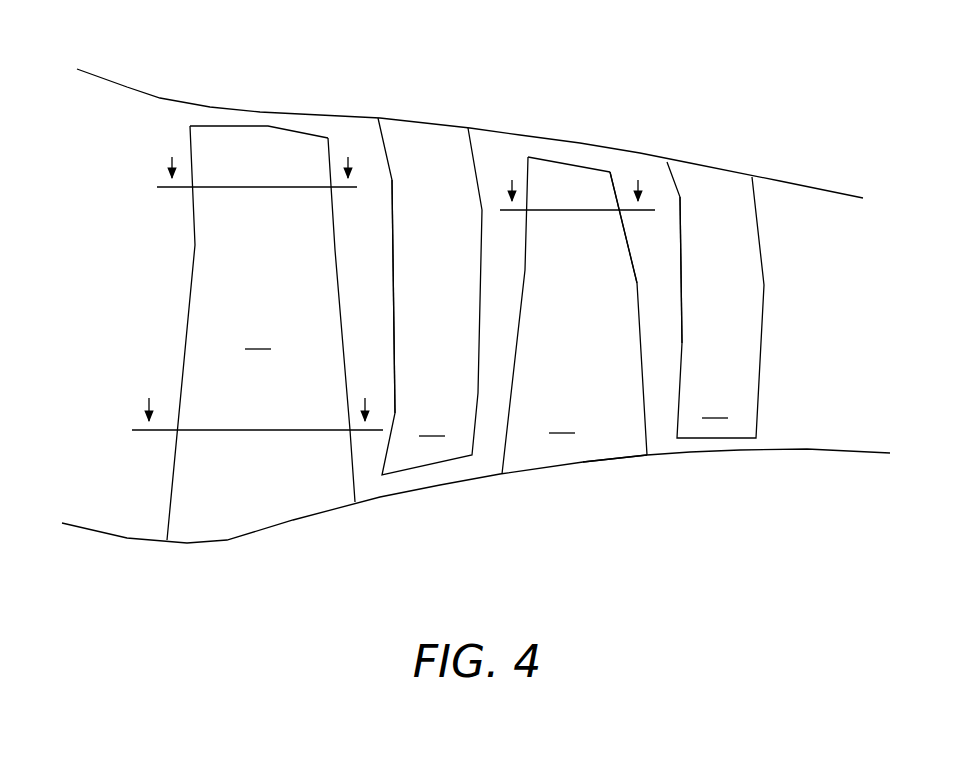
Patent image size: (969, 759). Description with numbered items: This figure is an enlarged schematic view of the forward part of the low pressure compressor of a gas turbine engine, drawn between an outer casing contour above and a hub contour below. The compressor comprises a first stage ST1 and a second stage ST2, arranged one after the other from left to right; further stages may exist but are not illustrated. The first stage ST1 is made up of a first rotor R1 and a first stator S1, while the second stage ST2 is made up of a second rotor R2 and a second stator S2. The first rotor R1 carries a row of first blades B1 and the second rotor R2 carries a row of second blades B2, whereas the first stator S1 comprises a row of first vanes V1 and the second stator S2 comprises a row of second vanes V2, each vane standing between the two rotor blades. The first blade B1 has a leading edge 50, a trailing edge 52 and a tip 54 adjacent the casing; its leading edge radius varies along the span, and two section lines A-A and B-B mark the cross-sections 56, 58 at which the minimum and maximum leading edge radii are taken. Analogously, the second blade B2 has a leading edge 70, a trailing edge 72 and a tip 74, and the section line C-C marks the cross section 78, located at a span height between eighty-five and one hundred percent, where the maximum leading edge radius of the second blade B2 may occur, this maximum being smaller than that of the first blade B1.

The leading edge 50 is at (243, 280).
The trailing edge 52 is at (338, 268).
The tip 54 is at (213, 126).
The cross-section 56 is at (257, 431).
The cross-section 58 is at (257, 188).
The leading edge 70 is at (583, 272).
The trailing edge 72 is at (627, 235).
The tip 74 is at (573, 163).
The cross section 78 is at (575, 211).
The first blade B1 is at (257, 338).
The second blade B2 is at (561, 422).
The first vane V1 is at (430, 296).
The second vane V2 is at (715, 300).
The first stator S1 is at (415, 105).
The second stator S2 is at (729, 161).
The first stage ST1 is at (325, 80).
The second stage ST2 is at (656, 135).
The first rotor R1 is at (310, 545).
The second rotor R2 is at (585, 486).